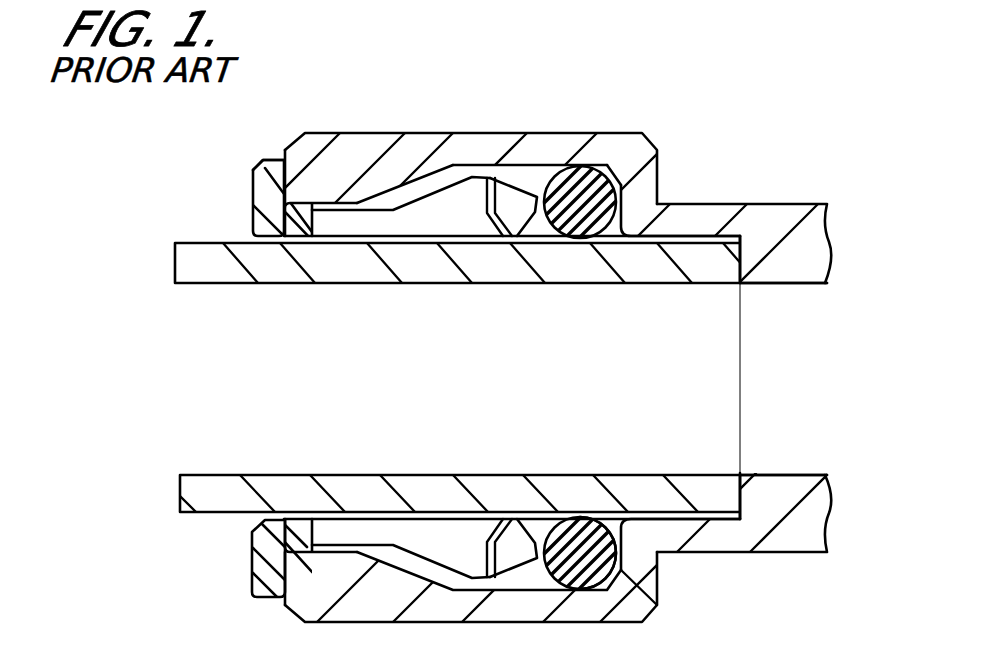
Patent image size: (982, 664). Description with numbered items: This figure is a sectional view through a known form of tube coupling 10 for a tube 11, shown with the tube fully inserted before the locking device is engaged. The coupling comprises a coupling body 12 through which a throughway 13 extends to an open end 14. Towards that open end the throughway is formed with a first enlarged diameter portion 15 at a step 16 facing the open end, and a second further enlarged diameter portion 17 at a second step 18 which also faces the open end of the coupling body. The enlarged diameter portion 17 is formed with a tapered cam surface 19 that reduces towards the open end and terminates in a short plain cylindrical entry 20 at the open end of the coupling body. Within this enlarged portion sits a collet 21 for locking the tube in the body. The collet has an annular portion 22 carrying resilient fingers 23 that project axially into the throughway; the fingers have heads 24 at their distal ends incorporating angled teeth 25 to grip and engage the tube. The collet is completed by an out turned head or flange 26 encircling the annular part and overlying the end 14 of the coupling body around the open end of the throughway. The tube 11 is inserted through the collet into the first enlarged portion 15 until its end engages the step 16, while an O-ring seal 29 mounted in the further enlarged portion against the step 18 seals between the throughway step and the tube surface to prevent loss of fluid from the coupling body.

The tube coupling 10 is at (411, 96).
The tube 11 is at (188, 256).
The coupling body 12 is at (787, 212).
The throughway 13 is at (812, 278).
The open end 14 is at (253, 167).
The first enlarged diameter portion 15 is at (693, 210).
The step 16 is at (742, 268).
The second further enlarged diameter portion 17 is at (503, 175).
The second step 18 is at (658, 187).
The tapered cam surface 19 is at (400, 187).
The short plain cylindrical entry 20 is at (318, 200).
The collet 21 is at (222, 205).
The annular portion 22 is at (298, 205).
The resilient fingers 23 is at (360, 225).
The heads 24 is at (528, 208).
The angled teeth 25 is at (493, 223).
The out turned head or flange 26 is at (253, 188).
The O-ring seal 29 is at (603, 167).